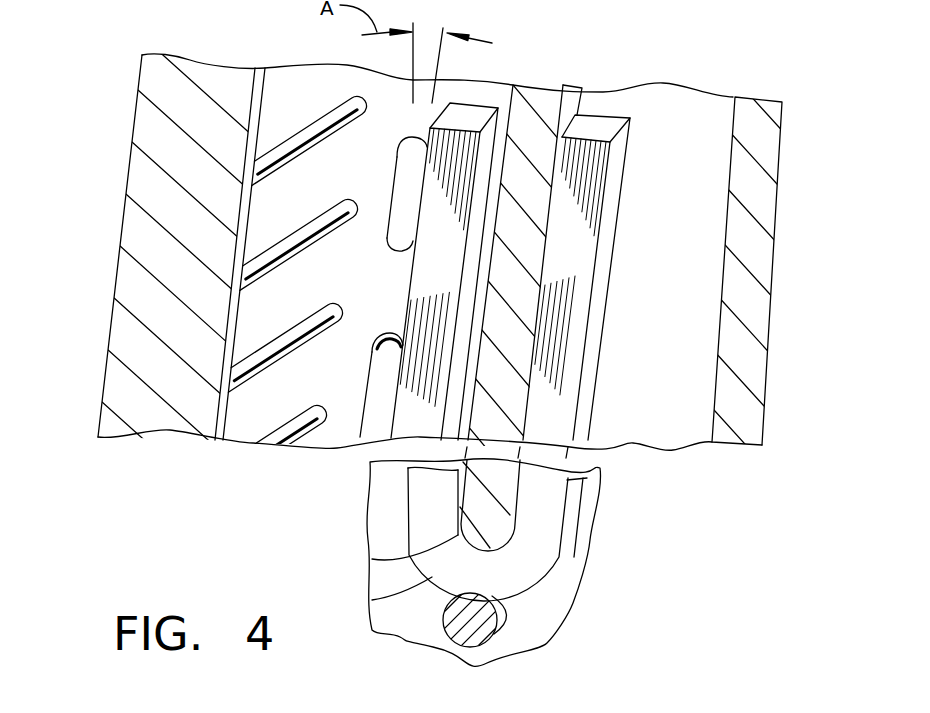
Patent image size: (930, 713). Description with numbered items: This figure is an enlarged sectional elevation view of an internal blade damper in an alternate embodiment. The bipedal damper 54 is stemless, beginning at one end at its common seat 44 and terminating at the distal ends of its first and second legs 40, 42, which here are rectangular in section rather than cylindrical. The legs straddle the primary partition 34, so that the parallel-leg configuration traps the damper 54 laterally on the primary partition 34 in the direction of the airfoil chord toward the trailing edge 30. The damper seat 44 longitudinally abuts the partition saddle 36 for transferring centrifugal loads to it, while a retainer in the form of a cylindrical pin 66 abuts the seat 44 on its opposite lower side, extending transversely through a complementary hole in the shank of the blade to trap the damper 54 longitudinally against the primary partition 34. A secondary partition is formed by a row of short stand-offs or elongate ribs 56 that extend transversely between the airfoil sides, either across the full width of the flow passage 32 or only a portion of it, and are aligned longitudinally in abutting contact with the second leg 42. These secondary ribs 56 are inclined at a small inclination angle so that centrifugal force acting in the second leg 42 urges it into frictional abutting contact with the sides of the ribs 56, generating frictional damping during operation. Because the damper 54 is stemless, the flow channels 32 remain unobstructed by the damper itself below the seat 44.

The trailing edge 30 is at (128, 167).
The flow channels 32 is at (280, 106).
The primary partition 34 is at (547, 82).
The partition saddle 36 is at (372, 559).
The first leg 40 is at (597, 300).
The second leg 42 is at (423, 272).
The common seat 44 is at (372, 600).
The bipedal damper 54 is at (626, 238).
The secondary ribs 56 is at (367, 373).
The retainer pin 66 is at (457, 643).